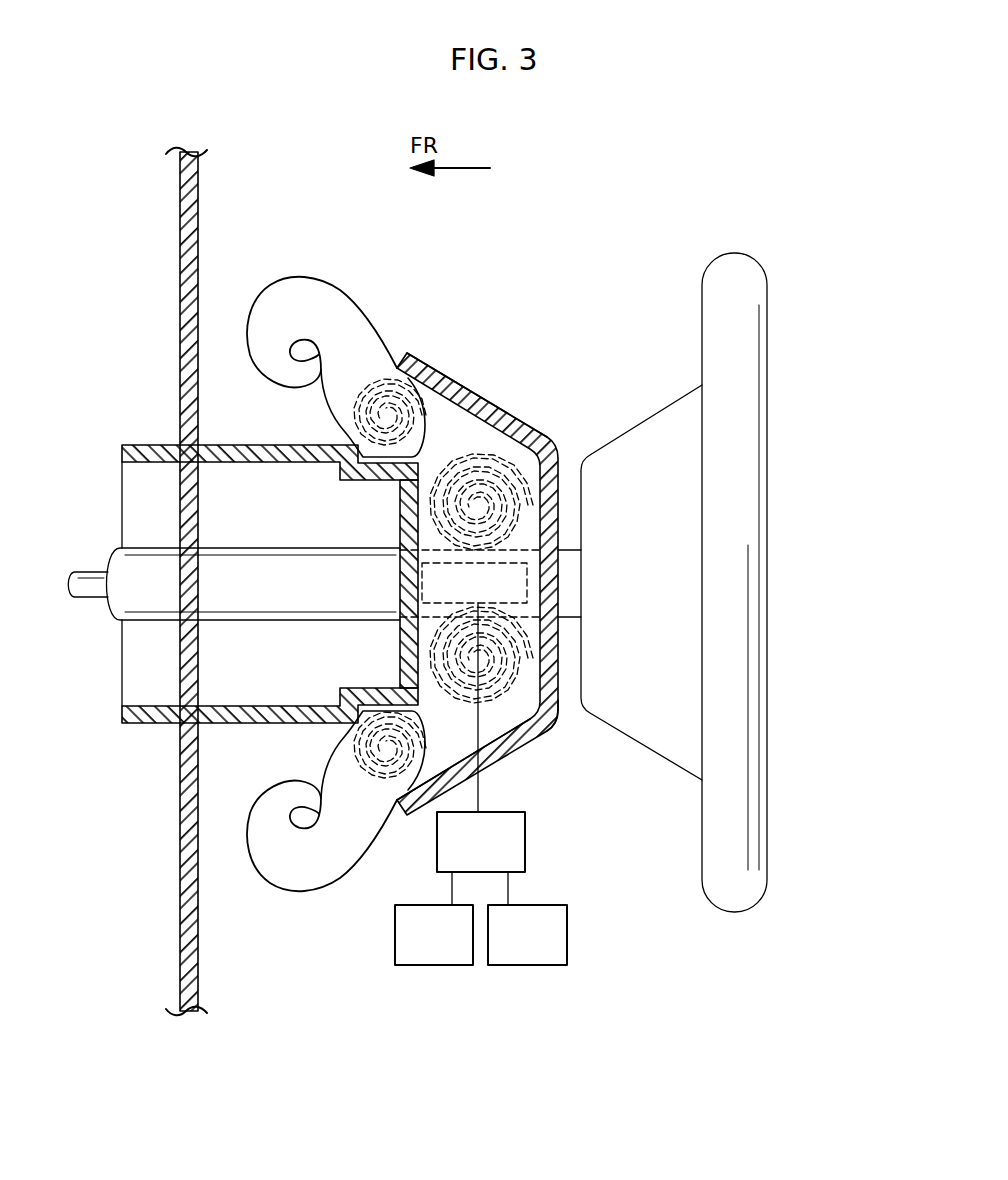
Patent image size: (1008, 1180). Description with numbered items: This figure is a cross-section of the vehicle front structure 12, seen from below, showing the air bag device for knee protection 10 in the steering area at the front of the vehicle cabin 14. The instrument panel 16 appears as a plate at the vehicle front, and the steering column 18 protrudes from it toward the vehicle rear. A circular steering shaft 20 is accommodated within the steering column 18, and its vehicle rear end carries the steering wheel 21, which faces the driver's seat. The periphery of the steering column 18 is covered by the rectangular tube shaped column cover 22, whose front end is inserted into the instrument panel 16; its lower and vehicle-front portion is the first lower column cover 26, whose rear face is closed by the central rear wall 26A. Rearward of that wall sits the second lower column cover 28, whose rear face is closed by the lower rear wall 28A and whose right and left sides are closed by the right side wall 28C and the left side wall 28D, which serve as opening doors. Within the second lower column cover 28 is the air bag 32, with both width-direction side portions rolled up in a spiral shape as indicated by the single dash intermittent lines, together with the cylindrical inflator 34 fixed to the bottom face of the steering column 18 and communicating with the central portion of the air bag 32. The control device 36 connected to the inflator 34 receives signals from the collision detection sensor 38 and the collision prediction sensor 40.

The air bag device for knee protection 10 is at (446, 638).
The vehicle front structure 12 is at (704, 546).
The vehicle cabin 14 is at (610, 346).
The instrument panel 16 is at (199, 192).
The steering column 18 is at (244, 547).
The steering shaft 20 is at (83, 571).
The steering wheel 21 is at (768, 478).
The column cover 22 is at (270, 579).
The first lower column cover 26 is at (235, 726).
The central rear wall 26A is at (399, 652).
The second lower column cover 28 is at (510, 584).
The lower rear wall 28A is at (564, 713).
The right side wall 28C is at (522, 746).
The left side wall 28D is at (480, 402).
The air bag 32 is at (354, 292).
The inflator 34 is at (421, 568).
The control device 36 is at (526, 840).
The collision detection sensor 38 is at (432, 966).
The collision prediction sensor 40 is at (527, 966).